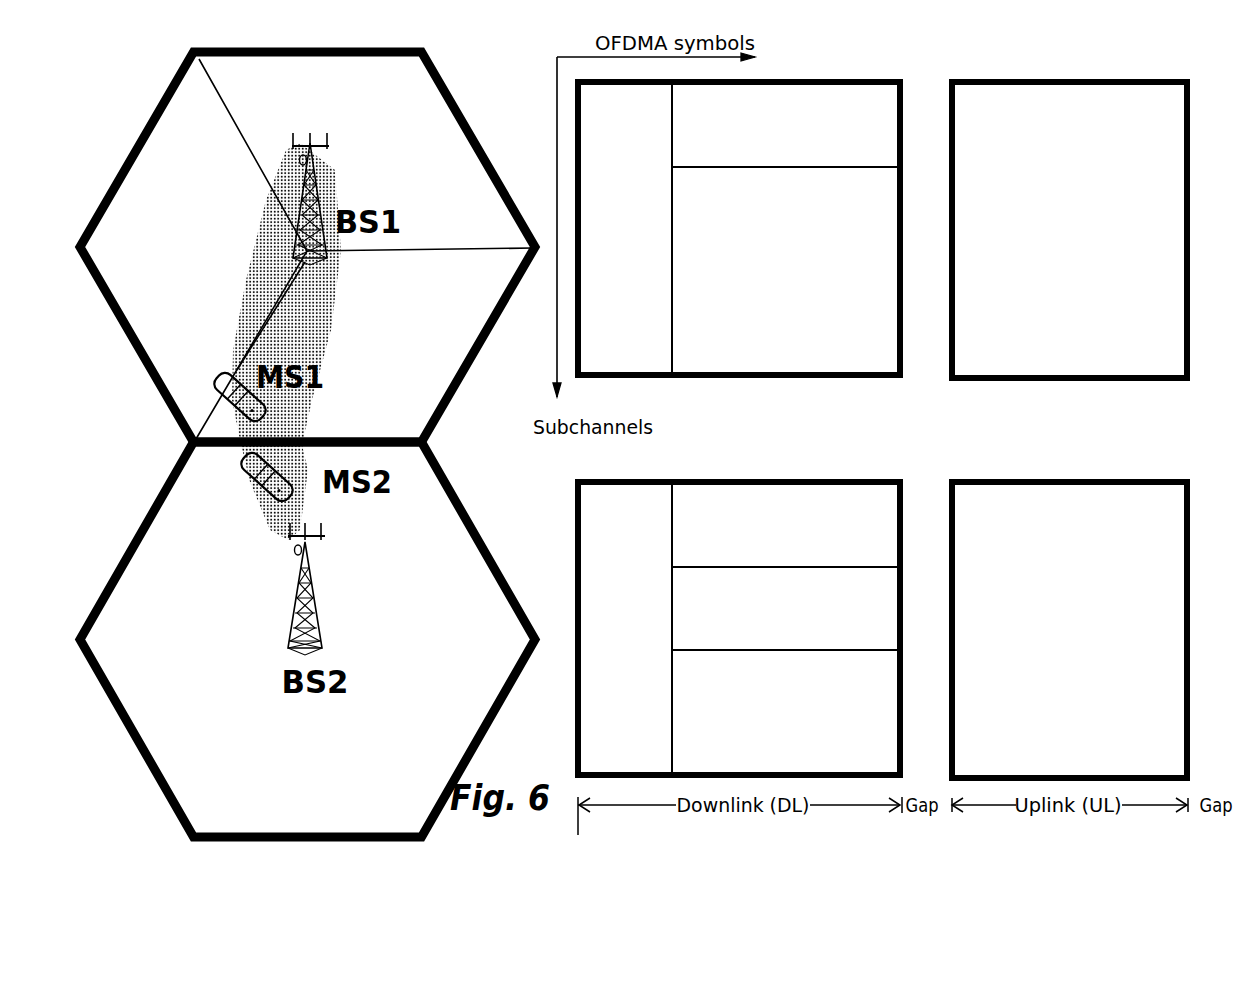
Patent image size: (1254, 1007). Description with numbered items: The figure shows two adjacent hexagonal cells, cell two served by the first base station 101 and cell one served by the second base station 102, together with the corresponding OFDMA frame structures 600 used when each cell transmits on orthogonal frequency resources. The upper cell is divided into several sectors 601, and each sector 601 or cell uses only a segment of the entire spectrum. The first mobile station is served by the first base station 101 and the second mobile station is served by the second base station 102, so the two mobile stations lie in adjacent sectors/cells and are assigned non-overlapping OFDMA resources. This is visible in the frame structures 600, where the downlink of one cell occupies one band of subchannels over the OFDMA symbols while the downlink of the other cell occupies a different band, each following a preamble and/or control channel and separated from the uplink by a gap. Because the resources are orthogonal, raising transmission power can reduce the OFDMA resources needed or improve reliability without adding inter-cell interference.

The BS1 101 is at (458, 113).
The BS2 102 is at (466, 522).
The sector 601 is at (412, 198).
The OFDMA frame structure 600 is at (793, 167).